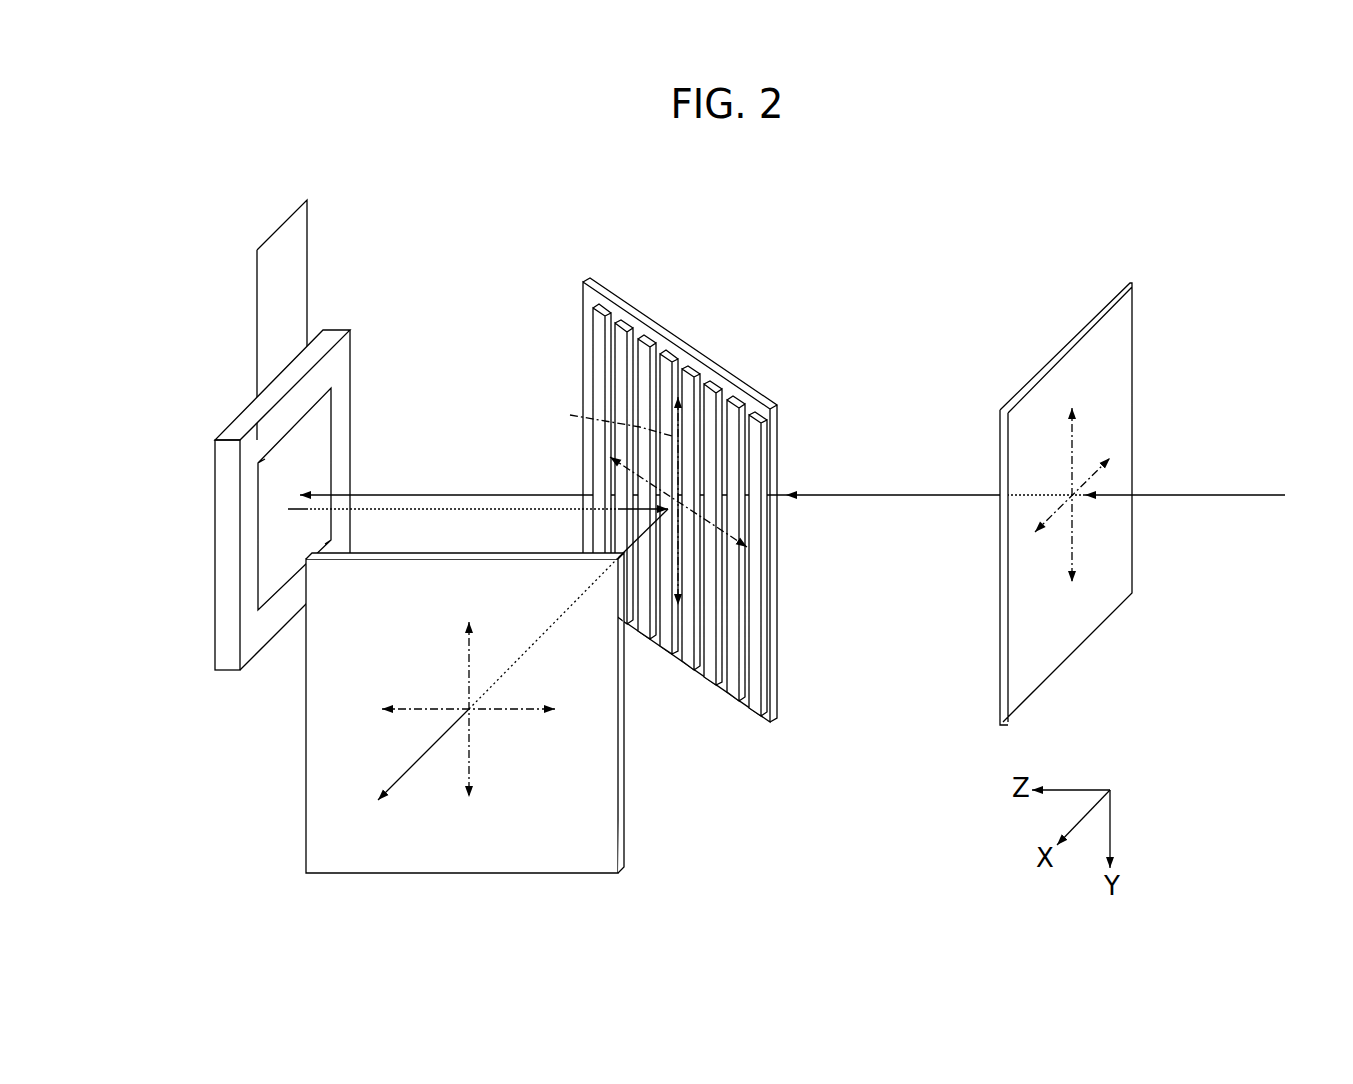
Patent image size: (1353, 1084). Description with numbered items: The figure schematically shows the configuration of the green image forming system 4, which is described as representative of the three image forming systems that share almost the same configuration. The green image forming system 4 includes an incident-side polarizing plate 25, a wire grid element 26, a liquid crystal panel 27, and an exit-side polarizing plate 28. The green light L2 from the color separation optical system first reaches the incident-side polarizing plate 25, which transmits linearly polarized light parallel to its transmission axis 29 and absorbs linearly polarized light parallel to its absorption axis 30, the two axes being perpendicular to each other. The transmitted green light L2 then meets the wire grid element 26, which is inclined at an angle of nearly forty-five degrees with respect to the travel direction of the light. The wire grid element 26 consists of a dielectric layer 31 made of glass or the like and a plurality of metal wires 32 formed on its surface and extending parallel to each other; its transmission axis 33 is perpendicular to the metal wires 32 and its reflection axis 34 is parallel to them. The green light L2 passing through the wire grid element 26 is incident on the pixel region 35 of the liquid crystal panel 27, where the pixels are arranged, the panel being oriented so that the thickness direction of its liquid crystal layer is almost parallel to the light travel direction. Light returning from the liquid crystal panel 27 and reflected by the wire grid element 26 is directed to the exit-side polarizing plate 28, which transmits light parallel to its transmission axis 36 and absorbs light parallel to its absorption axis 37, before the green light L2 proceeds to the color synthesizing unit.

The green image forming system 4 is at (1230, 250).
The incident-side polarizing plate 25 is at (1057, 627).
The wire grid element 26 is at (792, 443).
The liquid crystal panel 27 is at (271, 435).
The exit-side polarizing plate 28 is at (604, 762).
The transmission axis 29 is at (1083, 490).
The absorption axis 30 is at (1070, 452).
The dielectric layer 31 is at (617, 318).
The metal wires 32 is at (593, 343).
The transmission axis 33 is at (760, 548).
The reflection axis 34 is at (607, 418).
The pixel region 35 is at (333, 467).
The transmission axis 36 is at (466, 675).
The absorption axis 37 is at (499, 712).
The green light L2 is at (1175, 497).